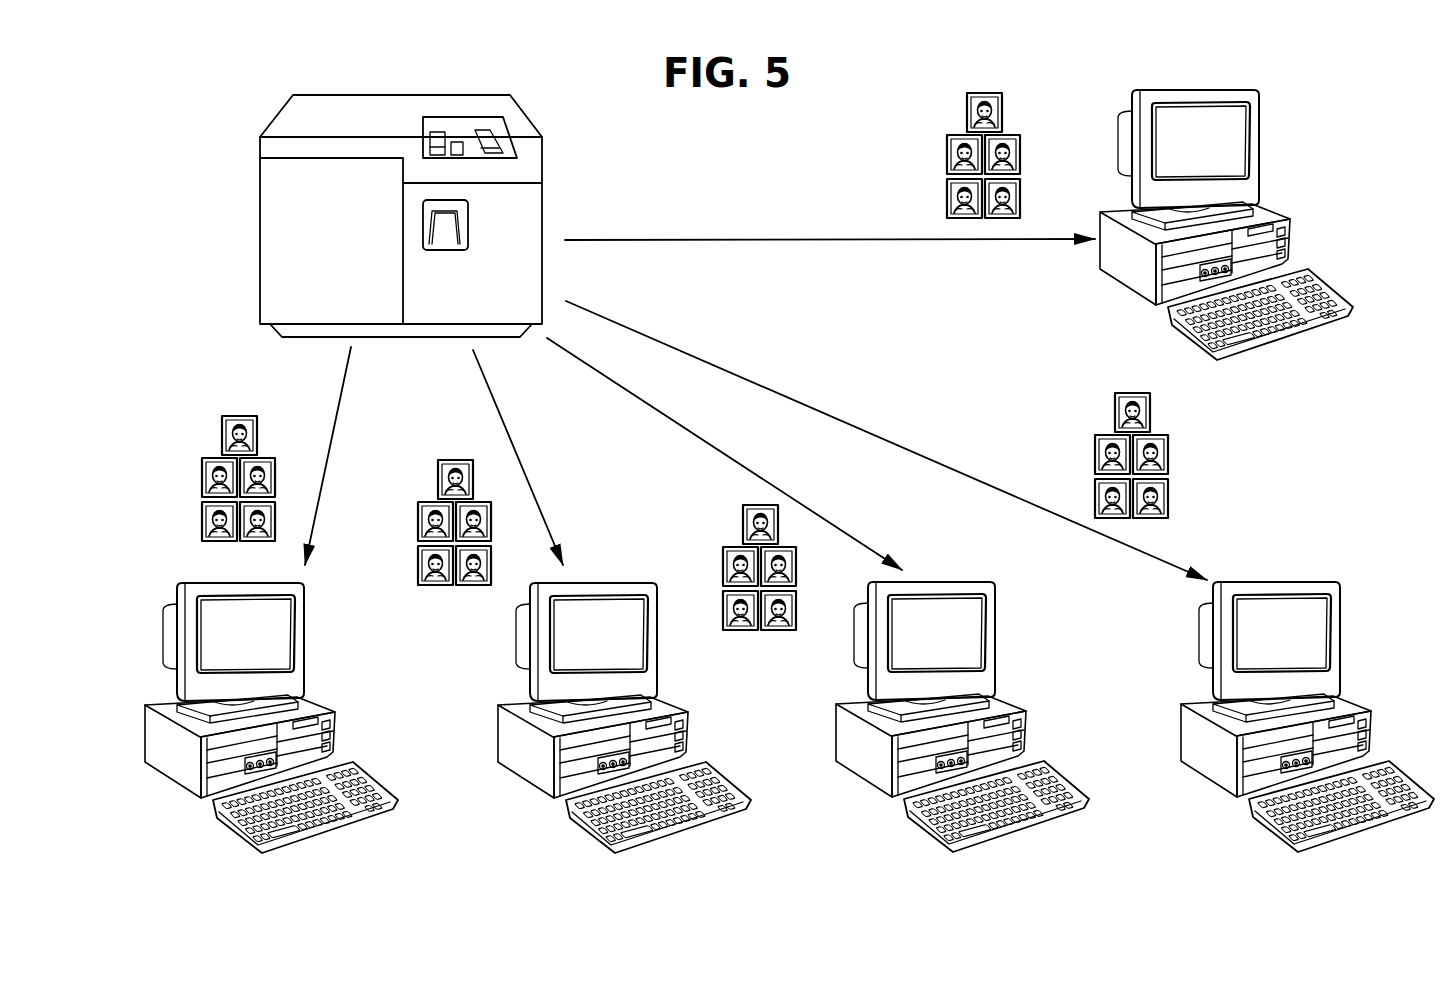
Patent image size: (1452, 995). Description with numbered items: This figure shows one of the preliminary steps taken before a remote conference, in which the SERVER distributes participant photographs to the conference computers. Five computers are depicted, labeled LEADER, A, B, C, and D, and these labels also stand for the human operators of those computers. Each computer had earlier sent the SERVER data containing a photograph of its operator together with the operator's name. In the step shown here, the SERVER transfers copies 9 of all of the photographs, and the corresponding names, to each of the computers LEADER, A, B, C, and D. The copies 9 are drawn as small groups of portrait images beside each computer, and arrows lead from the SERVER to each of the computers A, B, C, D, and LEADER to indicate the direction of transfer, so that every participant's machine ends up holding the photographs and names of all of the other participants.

The copies of photographs 9 is at (232, 392).
The server SERVER is at (401, 197).
The computer A is at (271, 704).
The computer B is at (624, 703).
The computer C is at (962, 702).
The computer D is at (1307, 702).
The leader computer LEADER is at (1231, 225).